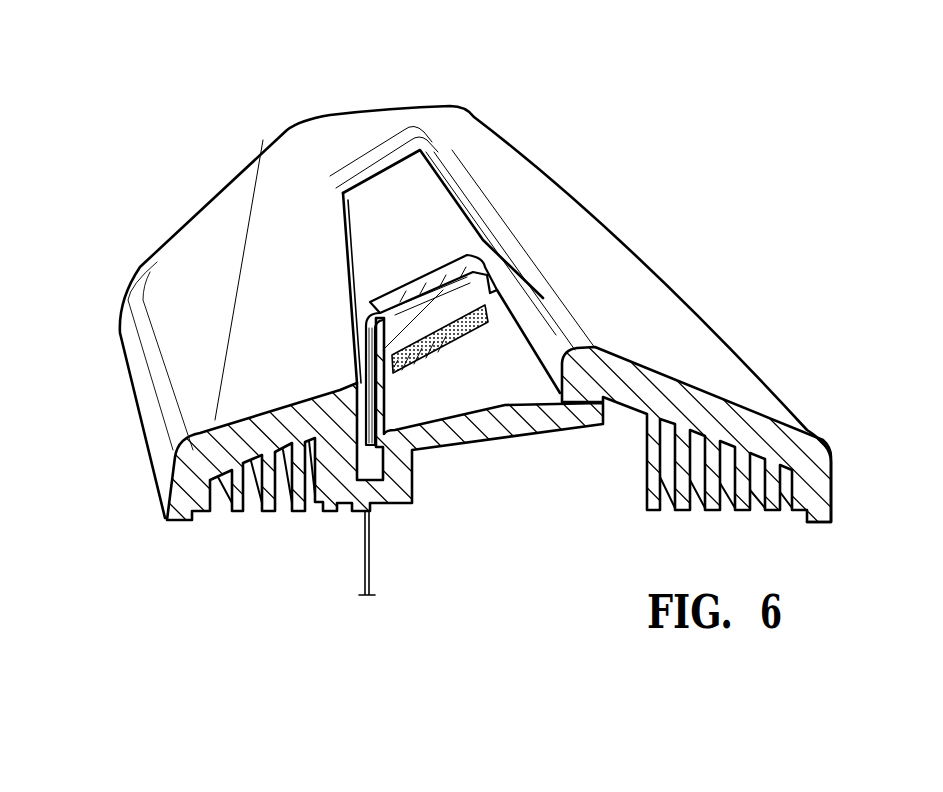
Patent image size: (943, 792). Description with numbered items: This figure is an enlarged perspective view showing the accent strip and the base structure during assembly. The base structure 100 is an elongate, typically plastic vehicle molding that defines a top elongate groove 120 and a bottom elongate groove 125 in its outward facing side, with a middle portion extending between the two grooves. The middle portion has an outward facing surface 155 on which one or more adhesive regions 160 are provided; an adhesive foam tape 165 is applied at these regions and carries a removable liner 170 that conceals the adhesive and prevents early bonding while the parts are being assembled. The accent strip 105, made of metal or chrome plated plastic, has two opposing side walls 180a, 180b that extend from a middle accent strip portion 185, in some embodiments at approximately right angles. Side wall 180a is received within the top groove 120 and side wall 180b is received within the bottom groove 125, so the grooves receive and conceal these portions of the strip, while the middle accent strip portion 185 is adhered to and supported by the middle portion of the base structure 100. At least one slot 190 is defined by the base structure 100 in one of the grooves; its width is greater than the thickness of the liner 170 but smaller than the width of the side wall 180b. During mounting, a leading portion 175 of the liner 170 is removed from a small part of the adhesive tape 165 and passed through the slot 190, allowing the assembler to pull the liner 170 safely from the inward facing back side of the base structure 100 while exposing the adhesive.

The base structure 100 is at (668, 280).
The accent strip 105 is at (421, 148).
The top elongate groove 120 is at (545, 395).
The bottom elongate groove 125 is at (367, 474).
The outward facing surface of the middle portion 155 is at (500, 371).
The adhesive region 160 is at (499, 334).
The adhesive foam tape 165 is at (483, 353).
The removable liner 170 is at (417, 312).
The leading portion of the liner 175 is at (358, 578).
The side wall 180a is at (495, 274).
The side wall 180b is at (357, 313).
The middle accent strip portion 185 is at (373, 200).
The slot 190 is at (350, 378).